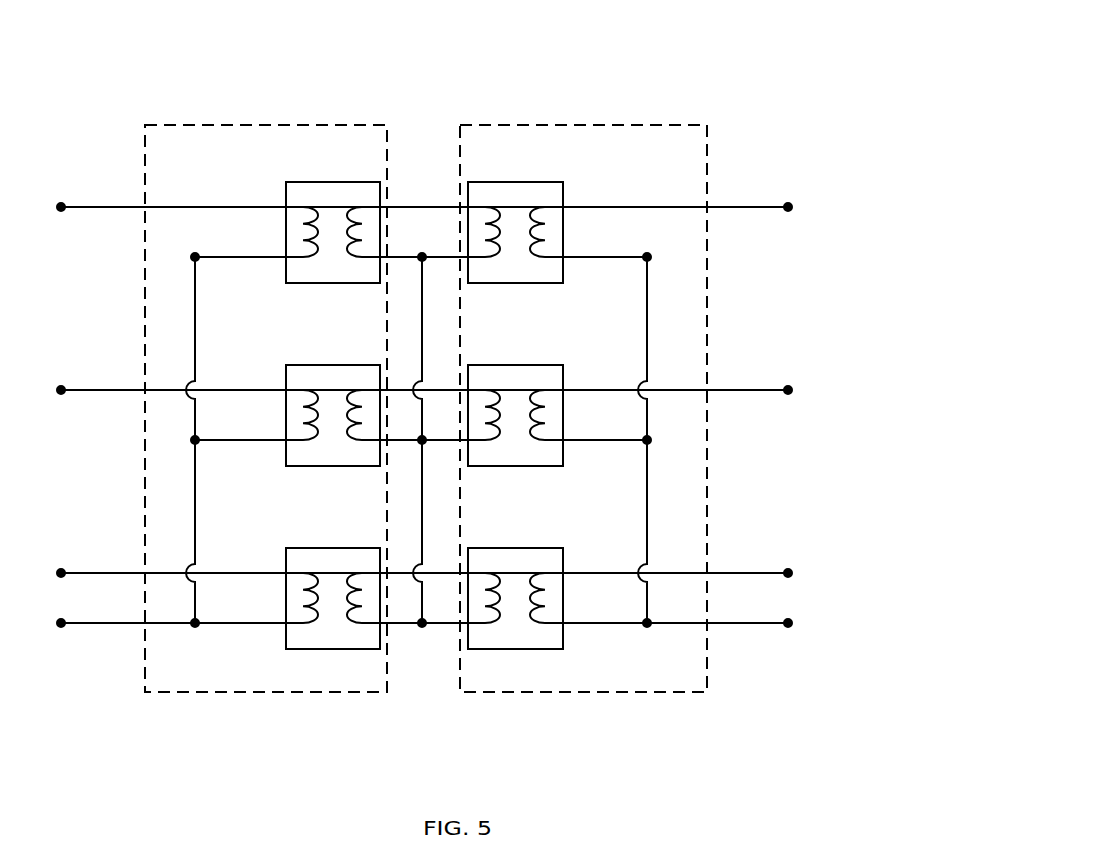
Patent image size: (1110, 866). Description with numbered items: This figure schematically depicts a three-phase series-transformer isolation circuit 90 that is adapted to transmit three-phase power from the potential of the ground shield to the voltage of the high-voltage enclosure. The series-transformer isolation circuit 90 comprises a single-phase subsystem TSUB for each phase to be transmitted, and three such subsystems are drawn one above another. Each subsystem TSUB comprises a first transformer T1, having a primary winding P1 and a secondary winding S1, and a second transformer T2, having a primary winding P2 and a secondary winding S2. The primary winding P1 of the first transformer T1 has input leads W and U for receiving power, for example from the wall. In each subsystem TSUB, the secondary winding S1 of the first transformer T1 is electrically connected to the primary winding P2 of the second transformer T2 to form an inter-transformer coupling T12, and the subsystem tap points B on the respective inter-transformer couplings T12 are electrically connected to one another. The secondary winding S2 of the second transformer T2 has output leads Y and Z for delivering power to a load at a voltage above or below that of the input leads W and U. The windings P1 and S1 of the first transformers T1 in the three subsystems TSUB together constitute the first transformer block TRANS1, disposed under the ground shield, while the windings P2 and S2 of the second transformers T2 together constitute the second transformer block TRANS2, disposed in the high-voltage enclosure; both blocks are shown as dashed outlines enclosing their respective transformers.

The series-transformer isolation circuit 90 is at (708, 42).
The first transformer block TRANS1 is at (232, 157).
The second transformer block TRANS2 is at (543, 158).
The first transformer T1 is at (327, 193).
The second transformer T2 is at (537, 192).
The inter-transformer coupling T12 is at (427, 207).
The primary winding P1 is at (308, 217).
The secondary winding S1 is at (357, 232).
The primary winding P2 is at (493, 217).
The secondary winding S2 is at (540, 232).
The input lead W is at (410, 391).
The input lead U is at (170, 441).
The subsystem tap point B is at (428, 452).
The output lead Y is at (799, 391).
The output lead Z is at (680, 441).
The single-phase subsystem TSUB is at (750, 246).